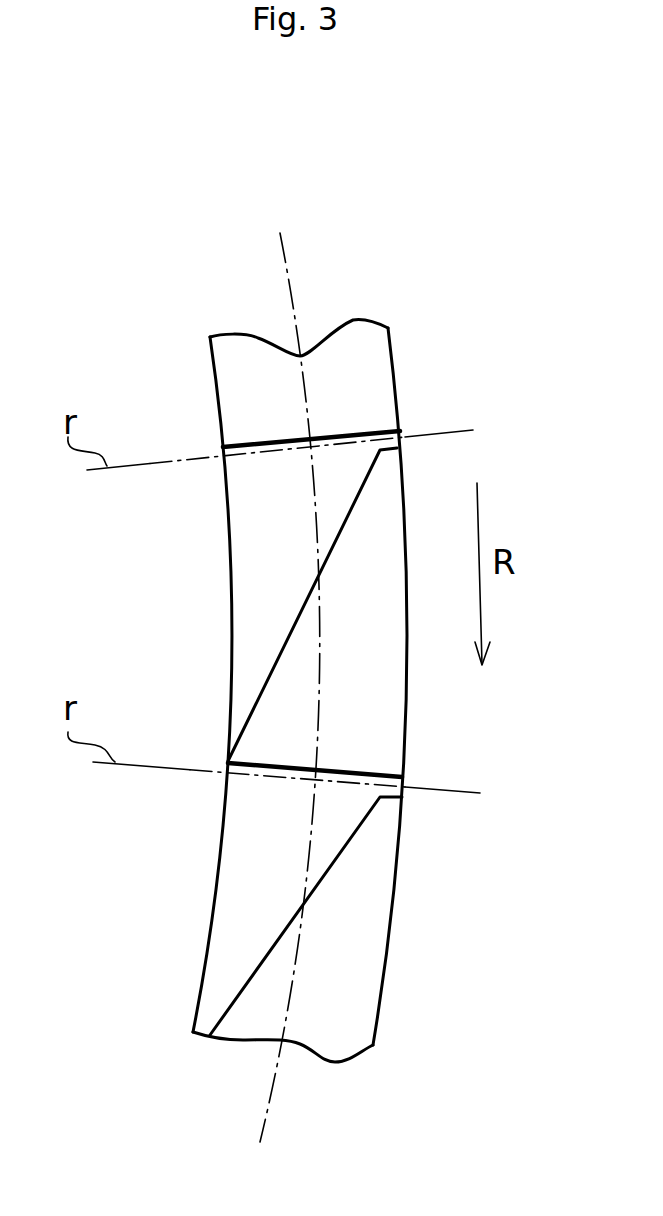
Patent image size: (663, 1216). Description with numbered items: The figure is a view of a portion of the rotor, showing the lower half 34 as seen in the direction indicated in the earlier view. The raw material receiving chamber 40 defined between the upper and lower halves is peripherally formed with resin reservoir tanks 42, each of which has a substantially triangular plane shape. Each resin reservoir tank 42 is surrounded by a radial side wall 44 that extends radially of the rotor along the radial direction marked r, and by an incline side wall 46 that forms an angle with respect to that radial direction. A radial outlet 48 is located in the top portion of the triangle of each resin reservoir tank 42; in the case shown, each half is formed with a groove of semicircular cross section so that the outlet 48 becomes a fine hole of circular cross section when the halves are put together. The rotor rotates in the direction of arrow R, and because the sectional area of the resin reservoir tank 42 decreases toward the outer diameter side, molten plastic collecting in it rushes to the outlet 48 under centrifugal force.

The lower half 34 is at (377, 932).
The raw material receiving chamber 40 is at (121, 621).
The resin reservoir tank 42 is at (247, 573).
The radial side wall 44 is at (275, 448).
The incline side wall 46 is at (250, 653).
The radial outlet 48 is at (400, 432).